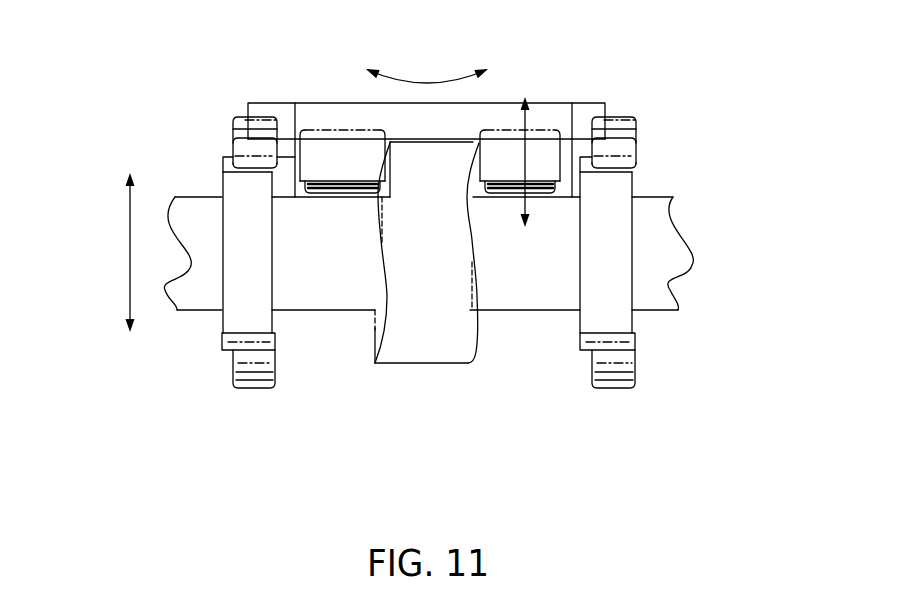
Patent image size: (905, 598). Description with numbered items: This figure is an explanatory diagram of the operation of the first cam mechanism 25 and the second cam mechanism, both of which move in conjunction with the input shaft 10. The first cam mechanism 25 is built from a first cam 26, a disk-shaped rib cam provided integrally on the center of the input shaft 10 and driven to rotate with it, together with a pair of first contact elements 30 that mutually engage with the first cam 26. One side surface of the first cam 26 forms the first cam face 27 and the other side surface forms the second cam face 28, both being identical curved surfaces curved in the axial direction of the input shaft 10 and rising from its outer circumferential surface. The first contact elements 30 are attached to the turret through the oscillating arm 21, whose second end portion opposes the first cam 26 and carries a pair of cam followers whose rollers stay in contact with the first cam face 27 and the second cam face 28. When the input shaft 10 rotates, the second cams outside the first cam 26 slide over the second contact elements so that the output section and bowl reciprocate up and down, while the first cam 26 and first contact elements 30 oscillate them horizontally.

The input shaft 10 is at (670, 275).
The oscillating arm 21 is at (493, 112).
The first cam mechanism 25 is at (405, 380).
The first cam 26 is at (447, 350).
The first cam face 27 is at (378, 330).
The second cam face 28 is at (477, 330).
The first contact elements 30 is at (496, 146).